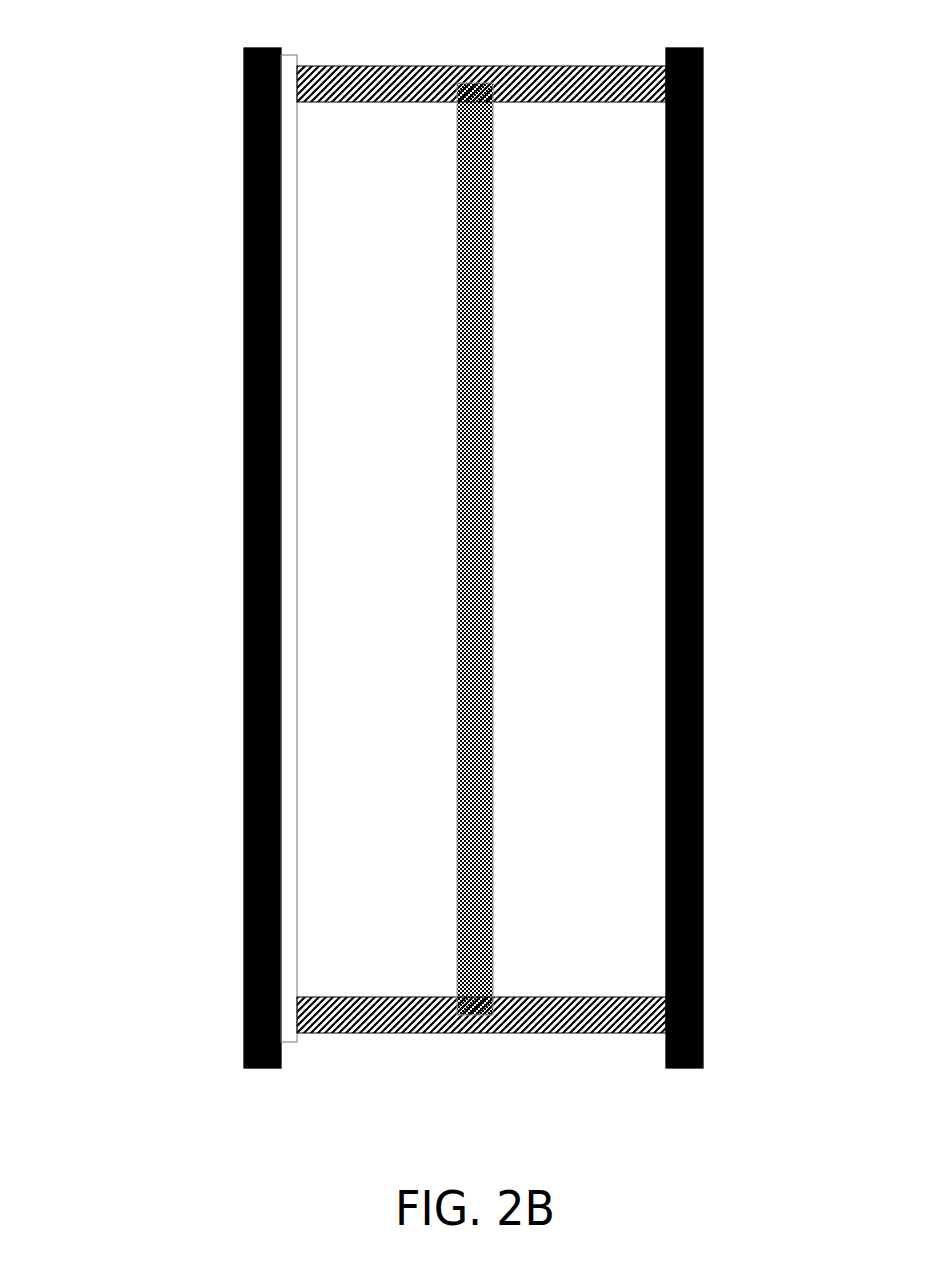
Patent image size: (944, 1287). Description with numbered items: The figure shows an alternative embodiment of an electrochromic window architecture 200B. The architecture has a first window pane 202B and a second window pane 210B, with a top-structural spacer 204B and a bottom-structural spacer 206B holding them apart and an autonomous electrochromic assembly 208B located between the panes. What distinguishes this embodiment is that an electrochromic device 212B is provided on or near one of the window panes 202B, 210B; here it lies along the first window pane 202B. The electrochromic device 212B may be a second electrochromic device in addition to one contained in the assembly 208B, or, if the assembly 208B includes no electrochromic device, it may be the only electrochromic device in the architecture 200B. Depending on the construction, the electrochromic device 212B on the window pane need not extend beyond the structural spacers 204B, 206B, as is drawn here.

The electrochromic window architecture 200B is at (168, 1080).
The first window pane 202B is at (244, 558).
The top-structural spacer 204B is at (472, 66).
The bottom-structural spacer 206B is at (473, 1033).
The autonomous electrochromic assembly 208B is at (455, 400).
The second window pane 210B is at (703, 558).
The electrochromic device 212B is at (297, 505).